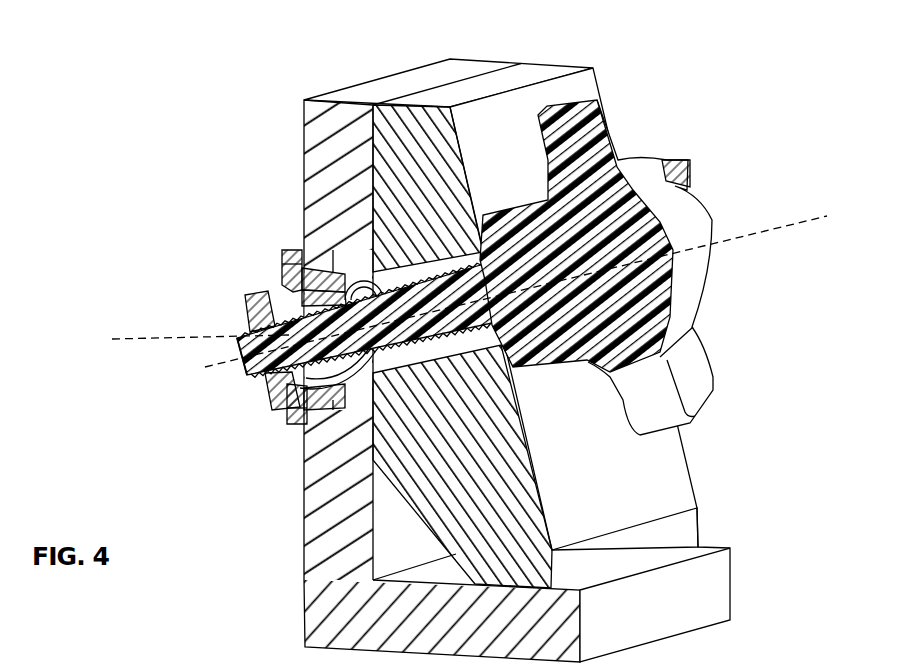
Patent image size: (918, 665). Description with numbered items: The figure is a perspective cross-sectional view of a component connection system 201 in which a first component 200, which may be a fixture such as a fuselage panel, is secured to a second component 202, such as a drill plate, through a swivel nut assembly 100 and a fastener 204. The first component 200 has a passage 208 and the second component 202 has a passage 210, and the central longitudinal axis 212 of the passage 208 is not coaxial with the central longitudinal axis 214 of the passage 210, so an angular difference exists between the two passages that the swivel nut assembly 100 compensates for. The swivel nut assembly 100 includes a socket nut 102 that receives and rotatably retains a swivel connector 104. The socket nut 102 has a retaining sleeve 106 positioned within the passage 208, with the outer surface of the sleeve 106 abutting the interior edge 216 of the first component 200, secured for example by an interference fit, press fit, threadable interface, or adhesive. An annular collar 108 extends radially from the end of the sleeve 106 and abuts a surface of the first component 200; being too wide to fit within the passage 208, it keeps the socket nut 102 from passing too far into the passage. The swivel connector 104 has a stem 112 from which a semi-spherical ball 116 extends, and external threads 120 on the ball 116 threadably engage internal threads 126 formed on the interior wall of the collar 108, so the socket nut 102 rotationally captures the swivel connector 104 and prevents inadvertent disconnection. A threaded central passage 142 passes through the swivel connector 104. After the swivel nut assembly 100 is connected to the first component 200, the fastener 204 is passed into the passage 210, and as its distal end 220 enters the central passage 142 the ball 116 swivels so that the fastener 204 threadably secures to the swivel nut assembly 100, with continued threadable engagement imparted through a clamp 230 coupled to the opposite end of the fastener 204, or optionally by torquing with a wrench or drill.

The swivel nut assembly 100 is at (258, 238).
The socket nut 102 is at (291, 243).
The swivel connector 104 is at (242, 290).
The retaining sleeve 106 is at (293, 247).
The annular collar 108 is at (300, 270).
The stem 112 is at (296, 290).
The ball 116 is at (285, 408).
The external threads 120 is at (295, 240).
The internal threads 126 is at (280, 410).
The central passage 142 is at (457, 290).
The first component 200 is at (330, 97).
The component connection system 201 is at (241, 46).
The second component 202 is at (528, 79).
The fastener 204 is at (452, 275).
The passage 208 is at (303, 425).
The passage 210 is at (427, 354).
The central longitudinal axis 212 is at (118, 338).
The central longitudinal axis 214 is at (768, 230).
The interior edge 216 is at (368, 262).
The distal end 220 is at (250, 373).
The clamp 230 is at (687, 190).